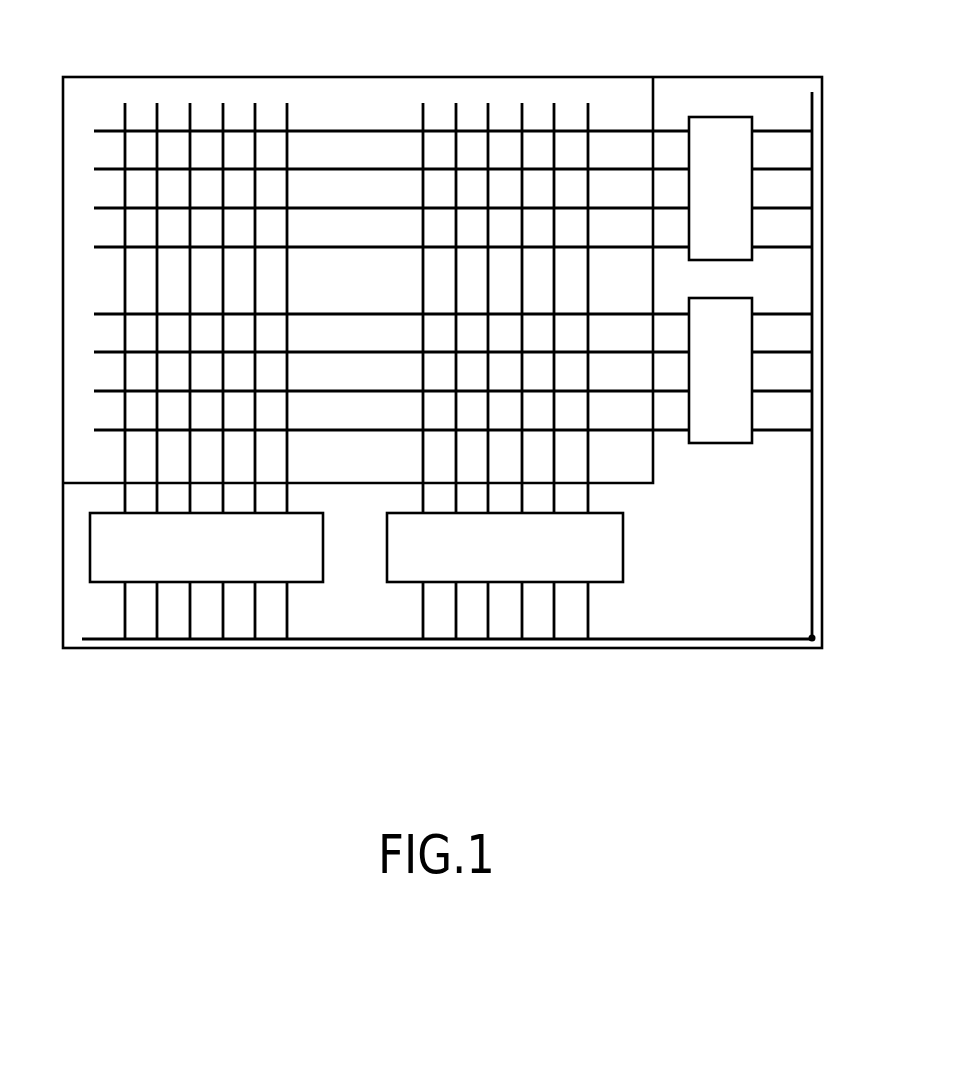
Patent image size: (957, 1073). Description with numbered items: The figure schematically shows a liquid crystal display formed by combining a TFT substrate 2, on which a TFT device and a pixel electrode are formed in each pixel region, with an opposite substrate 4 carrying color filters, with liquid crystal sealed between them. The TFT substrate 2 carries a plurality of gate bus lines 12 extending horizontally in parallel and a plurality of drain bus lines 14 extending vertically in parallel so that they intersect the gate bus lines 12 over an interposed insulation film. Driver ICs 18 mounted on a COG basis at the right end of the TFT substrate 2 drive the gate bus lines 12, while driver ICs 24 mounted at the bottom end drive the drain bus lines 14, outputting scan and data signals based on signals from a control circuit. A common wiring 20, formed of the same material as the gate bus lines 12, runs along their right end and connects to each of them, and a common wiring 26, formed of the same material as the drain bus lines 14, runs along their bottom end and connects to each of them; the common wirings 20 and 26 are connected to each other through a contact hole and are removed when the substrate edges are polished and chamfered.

The TFT substrate 2 is at (781, 75).
The opposite substrate 4 is at (655, 117).
The gate bus lines 12 is at (366, 130).
The drain bus lines 14 is at (590, 117).
The driver ICs 18 is at (748, 144).
The common wiring 20 is at (814, 513).
The driver ICs 24 is at (306, 578).
The common wiring 26 is at (731, 640).